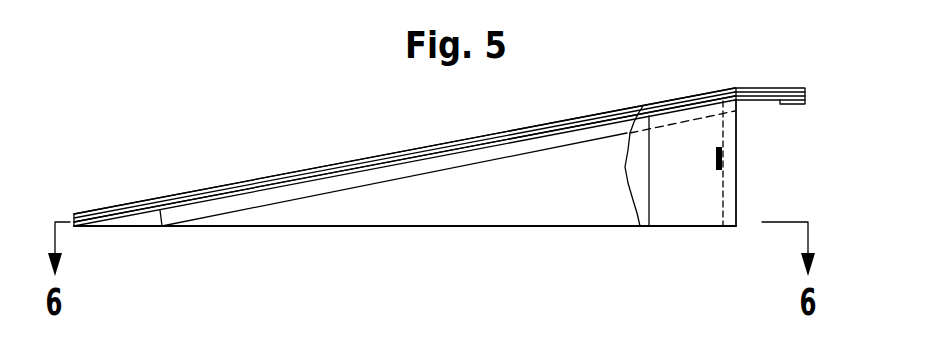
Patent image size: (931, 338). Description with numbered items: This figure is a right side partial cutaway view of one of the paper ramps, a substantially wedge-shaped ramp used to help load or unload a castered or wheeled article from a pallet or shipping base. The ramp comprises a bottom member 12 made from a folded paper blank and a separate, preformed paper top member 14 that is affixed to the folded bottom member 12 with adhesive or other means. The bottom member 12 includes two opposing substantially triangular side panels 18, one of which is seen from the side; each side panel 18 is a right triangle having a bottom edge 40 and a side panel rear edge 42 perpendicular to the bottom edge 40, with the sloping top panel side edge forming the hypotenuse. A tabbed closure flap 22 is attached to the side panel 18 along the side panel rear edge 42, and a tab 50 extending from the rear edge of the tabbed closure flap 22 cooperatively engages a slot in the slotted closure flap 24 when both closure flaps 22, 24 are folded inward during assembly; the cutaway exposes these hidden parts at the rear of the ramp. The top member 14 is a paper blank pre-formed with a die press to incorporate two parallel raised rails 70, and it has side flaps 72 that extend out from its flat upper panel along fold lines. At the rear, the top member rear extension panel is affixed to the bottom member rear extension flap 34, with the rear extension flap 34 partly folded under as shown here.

The bottom member 12 is at (455, 208).
The top member 14 is at (423, 146).
The side panel 18 is at (604, 189).
The tabbed closure flap 22 is at (728, 143).
The slotted closure flap 24 is at (675, 137).
The rear extension flap 34 is at (767, 101).
The bottom edge 40 is at (555, 227).
The side panel rear edge 42 is at (727, 228).
The tab 50 is at (716, 168).
The raised rail 70 is at (582, 116).
The side flap 72 is at (318, 185).